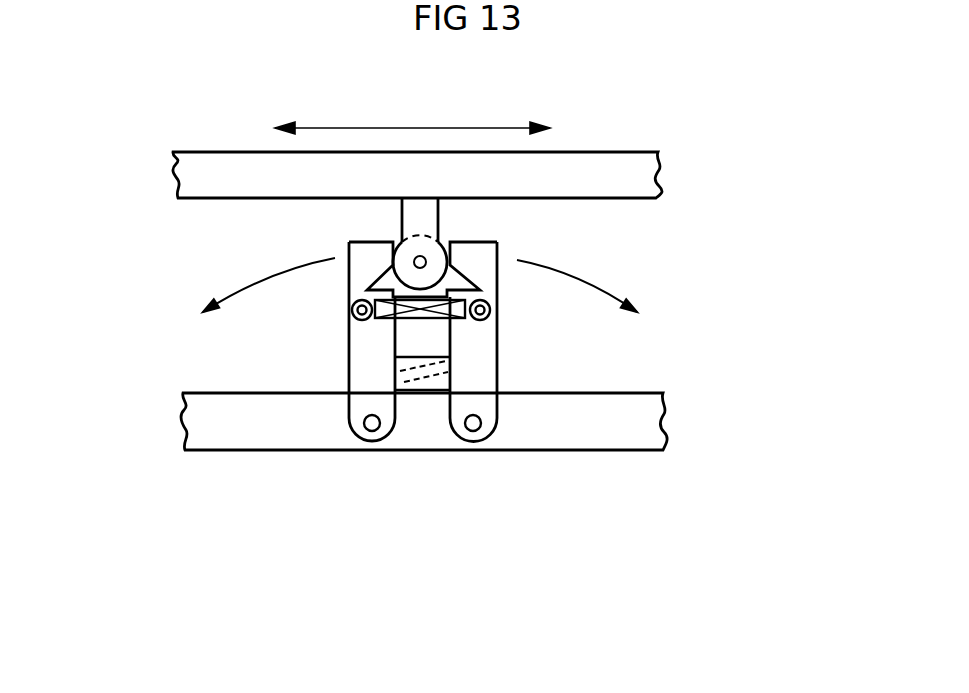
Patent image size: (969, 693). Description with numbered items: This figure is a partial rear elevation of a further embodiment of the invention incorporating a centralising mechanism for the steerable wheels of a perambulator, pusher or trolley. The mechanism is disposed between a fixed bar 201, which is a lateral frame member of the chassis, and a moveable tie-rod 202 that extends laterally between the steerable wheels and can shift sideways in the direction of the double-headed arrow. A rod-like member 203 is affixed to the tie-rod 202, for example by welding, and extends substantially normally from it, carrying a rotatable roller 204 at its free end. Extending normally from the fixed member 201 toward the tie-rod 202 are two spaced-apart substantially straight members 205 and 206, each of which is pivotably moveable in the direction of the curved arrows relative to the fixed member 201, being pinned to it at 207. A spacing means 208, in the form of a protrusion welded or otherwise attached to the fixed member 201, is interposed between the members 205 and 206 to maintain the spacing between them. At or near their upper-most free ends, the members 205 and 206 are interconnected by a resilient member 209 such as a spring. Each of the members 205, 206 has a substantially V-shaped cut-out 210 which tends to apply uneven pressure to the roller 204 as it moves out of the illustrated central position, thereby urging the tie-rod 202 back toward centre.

The fixed bar 201 is at (557, 433).
The tie-rod 202 is at (215, 178).
The member 203 is at (402, 217).
The roller 204 is at (624, 234).
The straight member 205 is at (365, 353).
The straight member 206 is at (480, 373).
The pin 207 is at (393, 526).
The spacing means 208 is at (402, 388).
The resilient member 209 is at (463, 325).
The V-shaped cut-out 210 is at (602, 268).